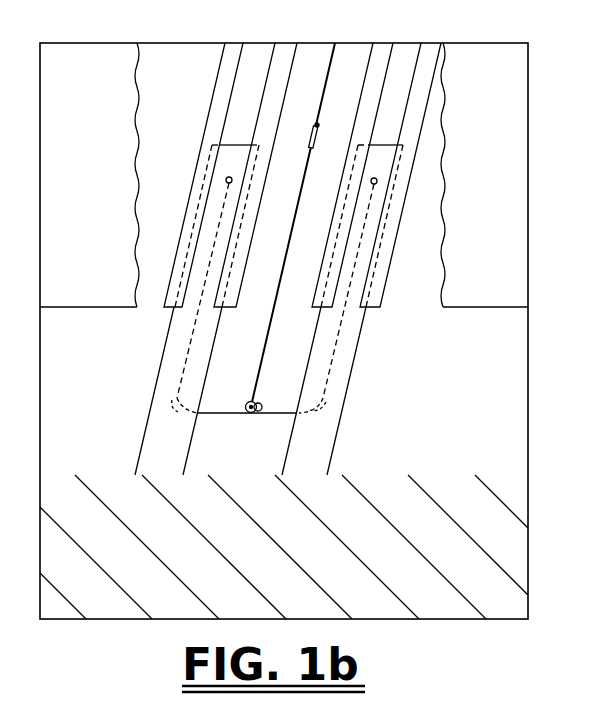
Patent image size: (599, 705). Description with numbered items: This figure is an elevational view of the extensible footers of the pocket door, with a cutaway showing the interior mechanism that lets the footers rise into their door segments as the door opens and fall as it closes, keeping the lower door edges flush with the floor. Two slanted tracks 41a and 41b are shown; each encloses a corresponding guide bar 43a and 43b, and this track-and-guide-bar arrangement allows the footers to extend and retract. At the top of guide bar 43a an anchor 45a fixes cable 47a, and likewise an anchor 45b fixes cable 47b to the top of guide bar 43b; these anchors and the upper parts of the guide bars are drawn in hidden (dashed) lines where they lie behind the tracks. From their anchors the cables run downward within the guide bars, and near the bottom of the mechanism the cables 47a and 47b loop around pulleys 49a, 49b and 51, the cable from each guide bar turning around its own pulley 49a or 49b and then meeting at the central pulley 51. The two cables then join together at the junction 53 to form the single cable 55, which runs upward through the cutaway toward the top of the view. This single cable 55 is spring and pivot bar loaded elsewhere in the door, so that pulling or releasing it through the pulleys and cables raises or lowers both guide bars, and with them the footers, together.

The track 41b is at (237, 50).
The track 41a is at (380, 50).
The guide bar 43b is at (152, 447).
The guide bar 43a is at (322, 443).
The anchor 45b is at (226, 179).
The anchor 45a is at (377, 184).
The cable 47b is at (226, 411).
The cable 47a is at (280, 411).
The pulley 49b is at (170, 404).
The pulley 49a is at (327, 403).
The pulley 51 is at (250, 414).
The junction of cables 53 is at (316, 145).
The single cable 55 is at (326, 91).